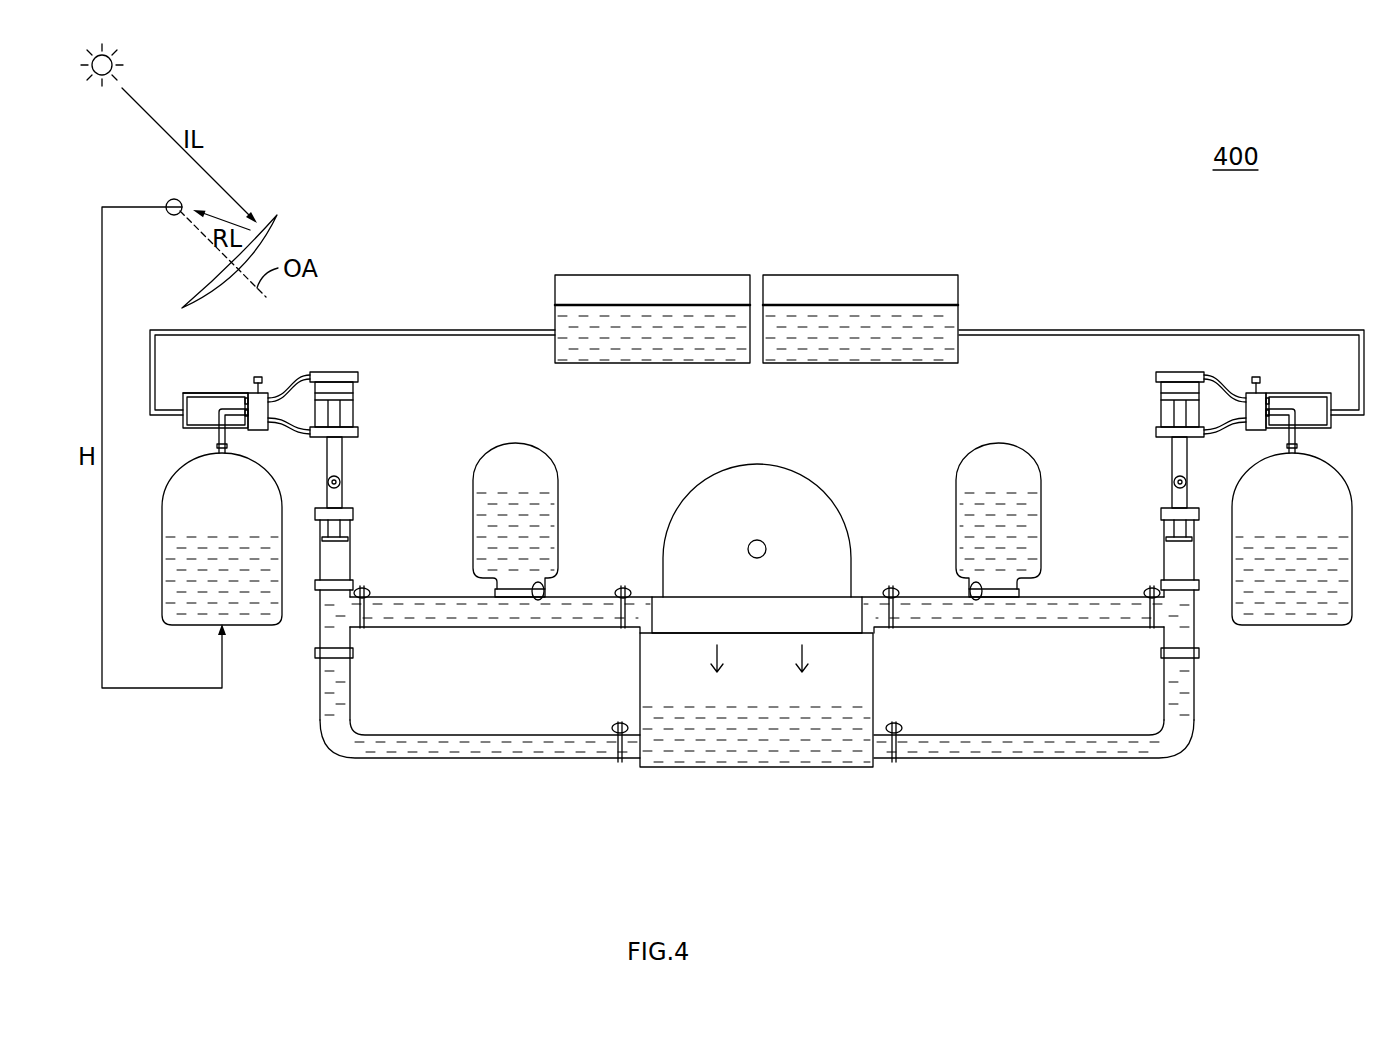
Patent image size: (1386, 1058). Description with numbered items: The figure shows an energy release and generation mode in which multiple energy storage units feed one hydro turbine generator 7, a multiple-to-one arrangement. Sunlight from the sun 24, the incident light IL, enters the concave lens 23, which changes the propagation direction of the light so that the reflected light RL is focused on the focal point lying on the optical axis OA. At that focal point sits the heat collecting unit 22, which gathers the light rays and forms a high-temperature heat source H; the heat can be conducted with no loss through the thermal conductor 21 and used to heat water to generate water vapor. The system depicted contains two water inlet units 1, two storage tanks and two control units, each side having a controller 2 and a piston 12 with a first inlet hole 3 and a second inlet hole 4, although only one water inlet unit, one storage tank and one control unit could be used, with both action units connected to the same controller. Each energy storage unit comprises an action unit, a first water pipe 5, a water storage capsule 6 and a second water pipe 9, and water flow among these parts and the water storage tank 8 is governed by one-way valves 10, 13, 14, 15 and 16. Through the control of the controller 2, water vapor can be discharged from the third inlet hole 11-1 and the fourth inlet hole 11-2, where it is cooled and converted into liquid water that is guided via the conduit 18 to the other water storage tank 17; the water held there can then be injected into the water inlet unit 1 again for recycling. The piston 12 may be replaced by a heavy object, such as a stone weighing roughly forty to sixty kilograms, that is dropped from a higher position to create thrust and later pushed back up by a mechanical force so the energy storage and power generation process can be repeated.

The water inlet unit 1 is at (162, 578).
The controller 2 is at (258, 376).
The first inlet hole 3 is at (358, 378).
The second inlet hole 4 is at (358, 432).
The first water pipe 5 is at (435, 625).
The water storage capsule 6 is at (555, 462).
The generator 7 is at (820, 492).
The water storage tank 8 is at (873, 670).
The second water pipe 9 is at (438, 758).
The valve 10 is at (315, 656).
The third inlet hole 11-1 is at (184, 393).
The fourth inlet hole 11-2 is at (203, 430).
The piston 12 is at (353, 395).
The valve 13 is at (365, 588).
The valve 14 is at (623, 586).
The valve 15 is at (546, 591).
The valve 16 is at (620, 722).
The water storage tank 17 is at (687, 363).
The conduit 18 is at (328, 330).
The thermal conductor 21 is at (102, 287).
The heat collecting unit 22 is at (168, 202).
The concave lens 23 is at (277, 218).
The sun 24 is at (100, 80).